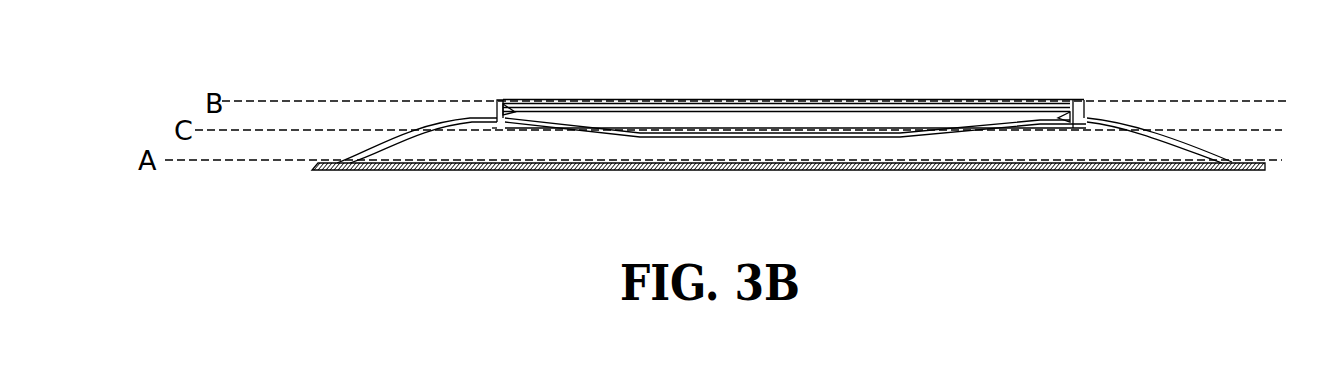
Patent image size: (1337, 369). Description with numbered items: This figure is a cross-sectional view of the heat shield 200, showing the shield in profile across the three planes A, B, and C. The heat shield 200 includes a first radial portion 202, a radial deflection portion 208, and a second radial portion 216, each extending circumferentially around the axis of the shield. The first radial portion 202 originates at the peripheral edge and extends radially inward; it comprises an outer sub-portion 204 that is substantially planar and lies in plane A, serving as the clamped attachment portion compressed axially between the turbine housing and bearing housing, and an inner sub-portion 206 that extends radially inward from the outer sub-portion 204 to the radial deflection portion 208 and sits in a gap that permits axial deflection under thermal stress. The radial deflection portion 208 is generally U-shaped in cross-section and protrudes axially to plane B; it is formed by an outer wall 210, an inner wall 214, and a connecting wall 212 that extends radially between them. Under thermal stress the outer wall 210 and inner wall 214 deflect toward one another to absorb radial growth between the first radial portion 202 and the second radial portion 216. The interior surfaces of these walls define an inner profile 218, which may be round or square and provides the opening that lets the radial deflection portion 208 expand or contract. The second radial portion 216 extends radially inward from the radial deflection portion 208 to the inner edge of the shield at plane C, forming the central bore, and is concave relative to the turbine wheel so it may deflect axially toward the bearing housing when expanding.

The heat shield 200 is at (781, 125).
The first radial portion 202 is at (407, 90).
The outer sub-portion 204 is at (320, 170).
The inner sub-portion 206 is at (1160, 120).
The radial deflection portion 208 is at (508, 98).
The outer wall 210 is at (1086, 100).
The connecting wall 212 is at (573, 99).
The inner wall 214 is at (640, 107).
The second radial portion 216 is at (807, 123).
The inner profile 218 is at (515, 130).